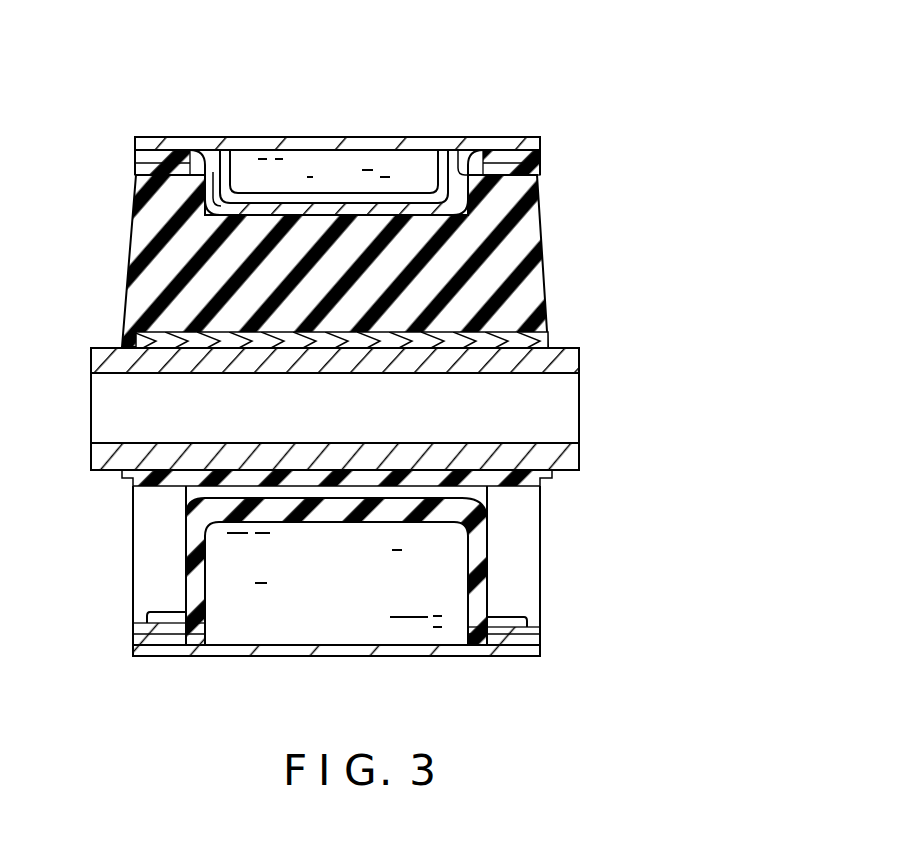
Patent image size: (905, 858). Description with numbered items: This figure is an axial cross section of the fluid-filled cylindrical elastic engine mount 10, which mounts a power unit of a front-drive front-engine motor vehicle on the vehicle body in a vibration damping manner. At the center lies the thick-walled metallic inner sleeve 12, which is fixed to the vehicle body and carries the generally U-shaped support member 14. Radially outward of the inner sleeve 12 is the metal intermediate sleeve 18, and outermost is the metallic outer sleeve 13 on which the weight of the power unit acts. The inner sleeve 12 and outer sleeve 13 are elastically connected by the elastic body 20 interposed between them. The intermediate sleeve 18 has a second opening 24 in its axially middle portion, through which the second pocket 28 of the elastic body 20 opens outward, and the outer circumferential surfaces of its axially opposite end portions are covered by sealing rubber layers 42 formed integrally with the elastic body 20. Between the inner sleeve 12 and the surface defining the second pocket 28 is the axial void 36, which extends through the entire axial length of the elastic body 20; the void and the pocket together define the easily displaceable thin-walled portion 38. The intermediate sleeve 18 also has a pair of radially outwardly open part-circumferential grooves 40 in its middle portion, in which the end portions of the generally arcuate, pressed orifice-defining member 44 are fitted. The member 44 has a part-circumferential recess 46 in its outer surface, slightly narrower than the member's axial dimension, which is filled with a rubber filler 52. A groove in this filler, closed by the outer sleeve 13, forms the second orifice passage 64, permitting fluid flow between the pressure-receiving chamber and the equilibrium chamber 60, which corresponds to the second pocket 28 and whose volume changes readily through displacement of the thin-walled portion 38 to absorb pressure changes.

The fluid-filled cylindrical elastic engine mount 10 is at (478, 62).
The inner sleeve 12 is at (140, 475).
The outer sleeve 13 is at (443, 658).
The support member 14 is at (498, 340).
The intermediate sleeve 18 is at (504, 132).
The elastic body 20 is at (143, 278).
The second opening 24 is at (203, 628).
The second pocket 28 is at (474, 533).
The axial void 36 is at (425, 493).
The thin-walled portion 38 is at (285, 507).
The part-circumferential grooves 40 is at (378, 205).
The sealing rubber layers 42 is at (150, 137).
The orifice-defining member 44 is at (300, 200).
The part-circumferential recess 46 is at (355, 186).
The rubber filler 52 is at (233, 173).
The equilibrium chamber 60 is at (350, 597).
The second orifice passage 64 is at (416, 160).